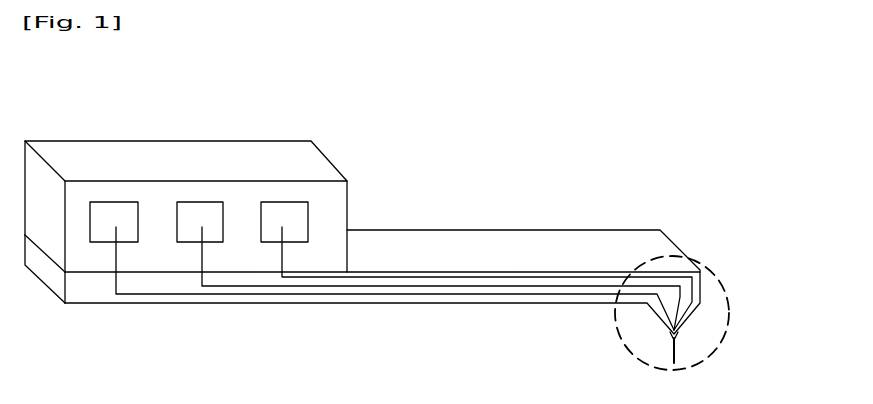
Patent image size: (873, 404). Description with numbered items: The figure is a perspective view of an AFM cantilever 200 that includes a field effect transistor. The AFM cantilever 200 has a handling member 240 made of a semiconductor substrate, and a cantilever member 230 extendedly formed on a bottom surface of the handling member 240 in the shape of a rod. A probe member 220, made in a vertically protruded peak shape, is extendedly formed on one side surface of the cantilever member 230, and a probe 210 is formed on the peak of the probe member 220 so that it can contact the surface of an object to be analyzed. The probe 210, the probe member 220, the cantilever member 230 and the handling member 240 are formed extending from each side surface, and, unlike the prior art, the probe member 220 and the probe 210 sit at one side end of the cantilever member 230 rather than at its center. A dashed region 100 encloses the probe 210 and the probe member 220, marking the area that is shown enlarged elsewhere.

The region 100 is at (707, 267).
The AFM cantilever 200 is at (531, 194).
The probe 210 is at (678, 331).
The probe member 220 is at (669, 350).
The cantilever member 230 is at (577, 253).
The handling member 240 is at (222, 163).